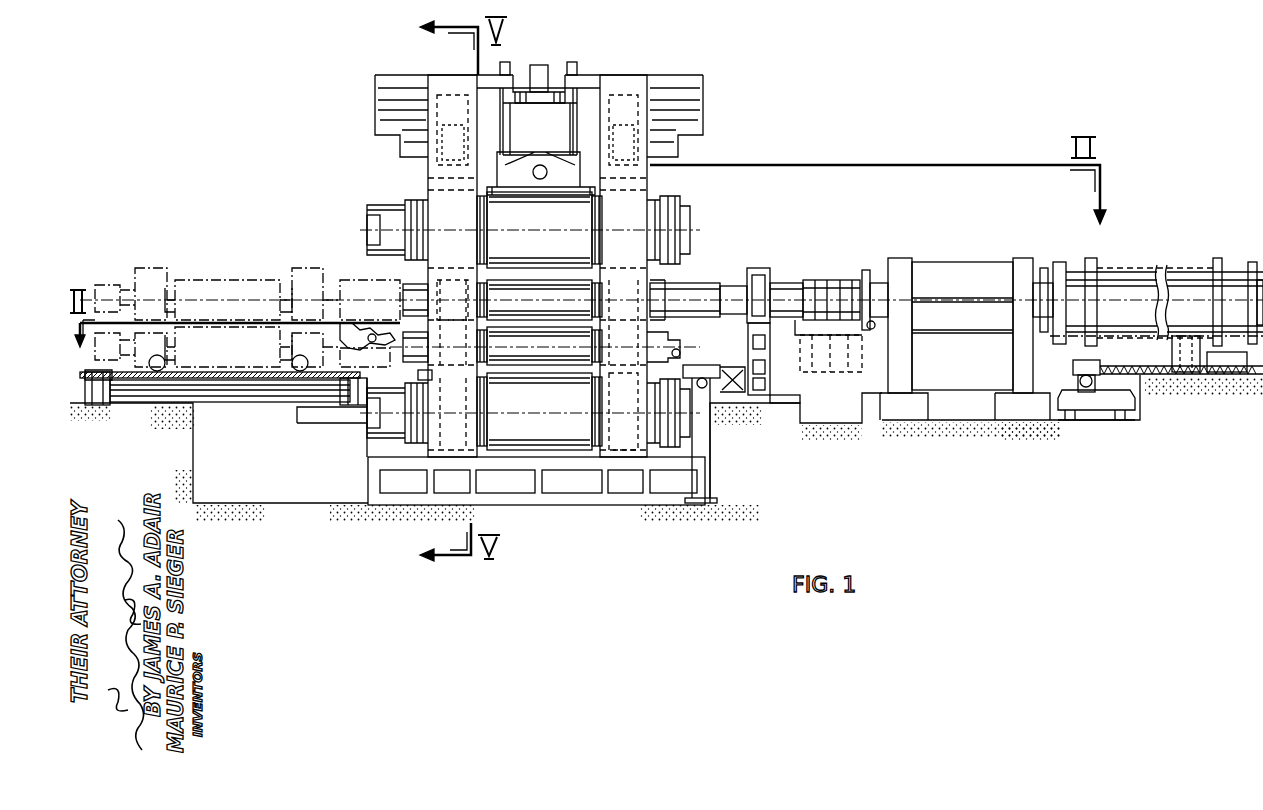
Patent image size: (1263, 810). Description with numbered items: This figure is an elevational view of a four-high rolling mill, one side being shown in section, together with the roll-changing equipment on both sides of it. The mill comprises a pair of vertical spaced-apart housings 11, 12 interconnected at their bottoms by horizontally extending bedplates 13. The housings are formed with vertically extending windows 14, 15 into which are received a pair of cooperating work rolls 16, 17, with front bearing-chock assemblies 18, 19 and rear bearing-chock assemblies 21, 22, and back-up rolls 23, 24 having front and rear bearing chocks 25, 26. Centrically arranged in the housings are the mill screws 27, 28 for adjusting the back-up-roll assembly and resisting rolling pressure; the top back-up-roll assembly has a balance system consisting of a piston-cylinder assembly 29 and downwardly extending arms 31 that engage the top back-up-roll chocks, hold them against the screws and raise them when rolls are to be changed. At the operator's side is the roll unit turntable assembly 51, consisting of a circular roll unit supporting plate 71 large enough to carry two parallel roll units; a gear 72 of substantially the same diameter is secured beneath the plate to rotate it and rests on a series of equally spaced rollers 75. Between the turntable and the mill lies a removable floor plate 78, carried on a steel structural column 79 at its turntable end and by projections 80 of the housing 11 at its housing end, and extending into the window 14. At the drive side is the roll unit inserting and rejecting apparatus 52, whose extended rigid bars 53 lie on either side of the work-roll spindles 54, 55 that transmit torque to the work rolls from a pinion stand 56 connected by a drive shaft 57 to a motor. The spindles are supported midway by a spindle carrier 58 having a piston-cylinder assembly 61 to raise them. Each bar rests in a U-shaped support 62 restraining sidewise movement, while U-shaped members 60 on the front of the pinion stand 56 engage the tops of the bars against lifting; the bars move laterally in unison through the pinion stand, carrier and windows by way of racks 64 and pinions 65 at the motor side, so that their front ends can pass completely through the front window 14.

The housing 11 is at (458, 219).
The housing 12 is at (631, 217).
The bedplates 13 is at (588, 505).
The window 14 is at (428, 186).
The window 15 is at (650, 181).
The work roll 16 is at (551, 308).
The work roll 17 is at (563, 354).
The front bearing-chock assembly 18 is at (437, 283).
The front bearing-chock assembly 19 is at (425, 362).
The rear bearing-chock assembly 21 is at (650, 271).
The rear bearing-chock assembly 22 is at (623, 411).
The back-up roll 23 is at (549, 234).
The back-up roll 24 is at (555, 413).
The front bearing chock 25 is at (427, 197).
The rear bearing chock 26 is at (660, 194).
The mill screw 27 is at (440, 105).
The mill screw 28 is at (635, 103).
The piston-cylinder assembly 29 is at (558, 92).
The arms 31 is at (508, 63).
The roll unit turntable assembly 51 is at (213, 270).
The roll unit inserting and rejecting apparatus 52 is at (815, 272).
The rigid bars 53 is at (1130, 360).
The work-roll spindle 54 is at (782, 283).
The work-roll spindle 55 is at (790, 378).
The pinion stand 56 is at (943, 270).
The drive shaft 57 is at (1149, 290).
The spindle carrier 58 is at (757, 270).
The U-shaped members 60 is at (862, 300).
The piston-cylinder assembly 61 is at (773, 410).
The U-shaped support 62 is at (750, 412).
The racks 64 is at (1183, 373).
The pinions 65 is at (1087, 386).
The roll unit supporting plate 71 is at (257, 380).
The gear 72 is at (97, 378).
The rollers 75 is at (110, 400).
The floor plate 78 is at (428, 377).
The steel structural column 79 is at (345, 410).
The projections 80 is at (368, 438).